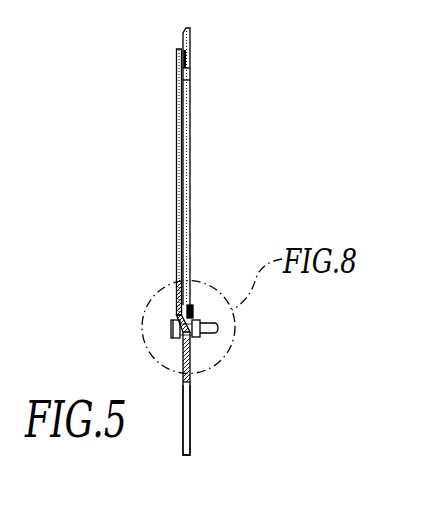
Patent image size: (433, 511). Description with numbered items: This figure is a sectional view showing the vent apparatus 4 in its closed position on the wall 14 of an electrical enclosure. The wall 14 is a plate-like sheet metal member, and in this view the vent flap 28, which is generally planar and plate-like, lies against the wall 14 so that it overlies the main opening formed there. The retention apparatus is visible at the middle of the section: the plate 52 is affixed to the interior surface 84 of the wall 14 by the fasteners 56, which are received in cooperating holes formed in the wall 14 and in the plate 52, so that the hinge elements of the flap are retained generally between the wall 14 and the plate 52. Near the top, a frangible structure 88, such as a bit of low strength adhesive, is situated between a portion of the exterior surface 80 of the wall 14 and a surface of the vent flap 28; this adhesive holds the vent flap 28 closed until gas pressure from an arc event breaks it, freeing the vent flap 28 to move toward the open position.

The vent apparatus 4 is at (167, 168).
The wall 14 is at (187, 28).
The vent flap 28 is at (176, 122).
The plate 52 is at (194, 311).
The fasteners 56 is at (213, 335).
The exterior surface 80 is at (183, 407).
The interior surface 84 is at (190, 412).
The frangible structure 88 is at (186, 62).